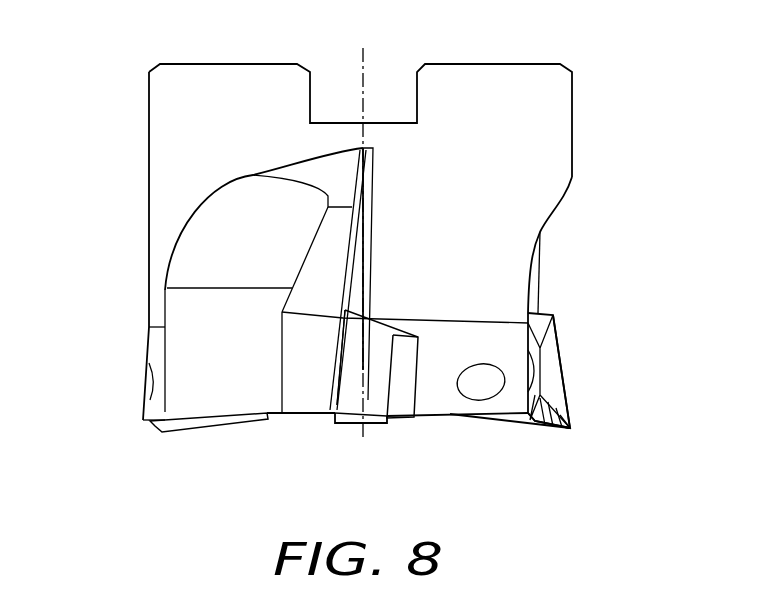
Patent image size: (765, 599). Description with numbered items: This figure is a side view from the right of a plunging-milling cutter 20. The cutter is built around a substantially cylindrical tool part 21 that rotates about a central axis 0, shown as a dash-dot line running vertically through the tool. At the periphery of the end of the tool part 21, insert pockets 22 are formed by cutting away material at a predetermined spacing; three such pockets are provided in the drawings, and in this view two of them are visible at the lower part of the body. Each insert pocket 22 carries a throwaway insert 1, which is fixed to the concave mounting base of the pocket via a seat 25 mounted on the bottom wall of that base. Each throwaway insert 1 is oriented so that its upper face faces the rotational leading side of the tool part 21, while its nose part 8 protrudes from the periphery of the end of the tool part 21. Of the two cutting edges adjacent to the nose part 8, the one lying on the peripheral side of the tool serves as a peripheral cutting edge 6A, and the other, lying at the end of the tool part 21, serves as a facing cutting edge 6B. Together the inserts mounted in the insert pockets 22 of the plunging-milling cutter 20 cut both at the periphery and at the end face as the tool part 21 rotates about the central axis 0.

The central axis 0 is at (363, 73).
The throwaway insert 1 is at (375, 340).
The peripheral cutting edge 6A is at (328, 400).
The facing cutting edge 6B is at (528, 425).
The nose part 8 is at (340, 425).
The plunging-milling cutter 20 is at (140, 113).
The tool part 21 is at (572, 123).
The insert pocket 22 is at (180, 353).
The seat 25 is at (397, 422).